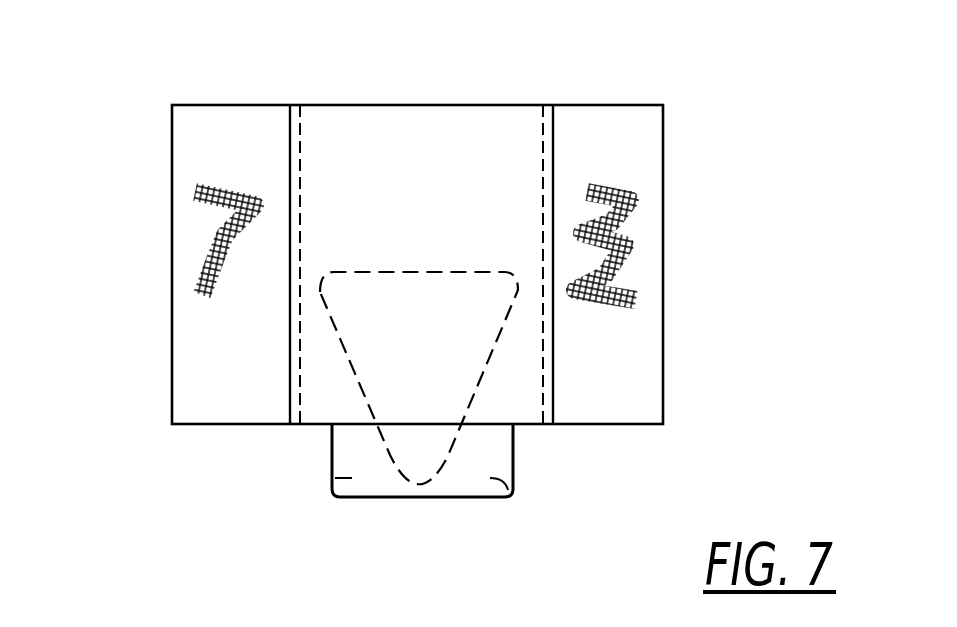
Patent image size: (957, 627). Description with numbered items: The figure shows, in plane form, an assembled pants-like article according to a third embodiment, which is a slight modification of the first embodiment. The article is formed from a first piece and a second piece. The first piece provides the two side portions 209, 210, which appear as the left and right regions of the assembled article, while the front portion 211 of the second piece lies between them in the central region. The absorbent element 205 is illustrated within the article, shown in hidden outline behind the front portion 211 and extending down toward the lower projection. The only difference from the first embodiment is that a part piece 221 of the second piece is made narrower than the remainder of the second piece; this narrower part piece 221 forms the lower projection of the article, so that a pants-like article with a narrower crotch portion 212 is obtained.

The absorbent element 205 is at (432, 452).
The side portion 209 is at (187, 263).
The side portion 210 is at (647, 272).
The front portion 211 is at (425, 133).
The crotch portion 212 is at (510, 493).
The part piece 221 is at (323, 492).